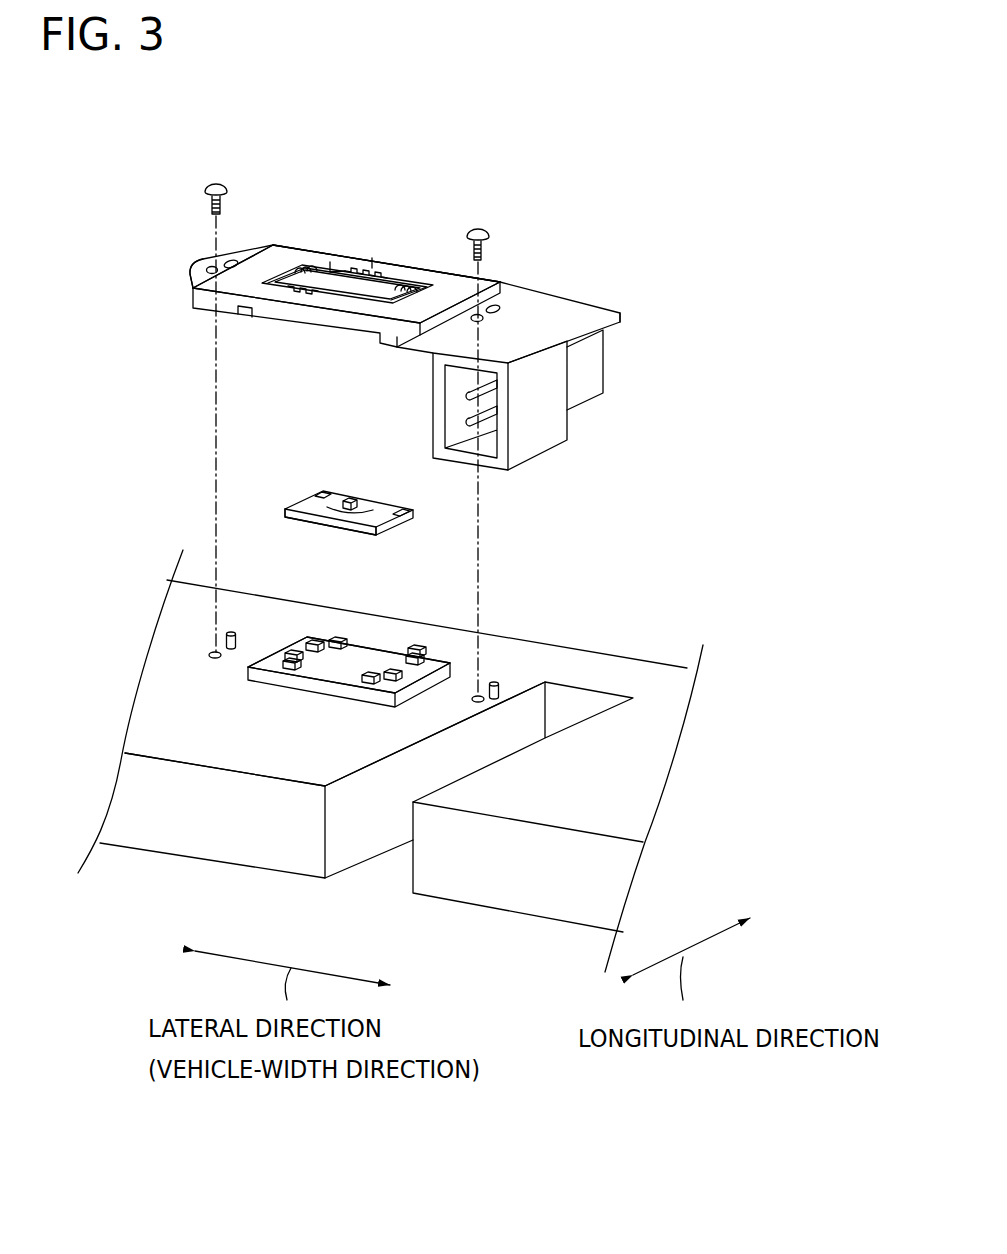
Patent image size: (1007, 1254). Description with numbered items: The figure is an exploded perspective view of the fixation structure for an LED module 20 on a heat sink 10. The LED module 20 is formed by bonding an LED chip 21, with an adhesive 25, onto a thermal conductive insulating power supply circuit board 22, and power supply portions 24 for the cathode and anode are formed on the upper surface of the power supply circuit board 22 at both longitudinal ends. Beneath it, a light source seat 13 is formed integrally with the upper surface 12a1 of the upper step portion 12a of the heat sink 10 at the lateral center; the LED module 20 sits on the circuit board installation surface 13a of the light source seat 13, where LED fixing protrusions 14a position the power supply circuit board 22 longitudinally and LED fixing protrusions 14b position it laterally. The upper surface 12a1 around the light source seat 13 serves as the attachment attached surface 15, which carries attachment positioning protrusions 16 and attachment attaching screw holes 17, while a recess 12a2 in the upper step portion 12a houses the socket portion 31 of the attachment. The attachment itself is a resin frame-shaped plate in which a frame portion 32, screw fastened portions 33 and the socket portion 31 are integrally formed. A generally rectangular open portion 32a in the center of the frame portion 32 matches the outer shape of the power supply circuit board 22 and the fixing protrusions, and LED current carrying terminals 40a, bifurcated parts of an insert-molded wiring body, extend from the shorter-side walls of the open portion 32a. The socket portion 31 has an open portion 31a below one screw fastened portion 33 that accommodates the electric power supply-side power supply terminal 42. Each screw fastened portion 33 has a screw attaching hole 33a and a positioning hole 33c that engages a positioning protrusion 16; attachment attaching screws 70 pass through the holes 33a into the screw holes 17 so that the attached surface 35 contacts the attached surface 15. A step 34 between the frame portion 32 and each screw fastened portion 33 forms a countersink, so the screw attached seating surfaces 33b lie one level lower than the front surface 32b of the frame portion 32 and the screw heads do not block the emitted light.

The heat sink 10 is at (528, 898).
The upper step portion 12a is at (527, 918).
The upper surface 12a1 is at (335, 811).
The recess 12a2 is at (370, 840).
The light source seat 13 is at (247, 673).
The circuit board installation surface 13a is at (360, 655).
The LED fixing protrusions 14a is at (336, 638).
The LED fixing protrusions 14b is at (312, 641).
The attachment attached surface 15 is at (430, 706).
The attachment positioning protrusions 16 is at (232, 632).
The attachment attaching screw holes 17 is at (209, 656).
The LED module 20 is at (326, 482).
The LED chip 21 is at (352, 499).
The power supply circuit board 22 is at (286, 511).
The power supply portions 24 is at (318, 493).
The adhesive 25 is at (374, 509).
The socket portion 31 is at (572, 425).
The open portion 31a is at (487, 436).
The frame portion 32 is at (354, 252).
The open portion 32a is at (345, 285).
The front surface 32b is at (447, 278).
The screw fastened portions 33 is at (182, 276).
The screw attaching hole 33a is at (206, 266).
The screw attached seating surfaces 33b is at (189, 270).
The positioning hole 33c is at (235, 261).
The step 34 is at (268, 246).
The attached surface 35 is at (325, 322).
The LED current carrying terminals 40a is at (313, 267).
The electric power supply-side power supply terminal 42 is at (460, 393).
The attachment attaching screws 70 is at (218, 183).